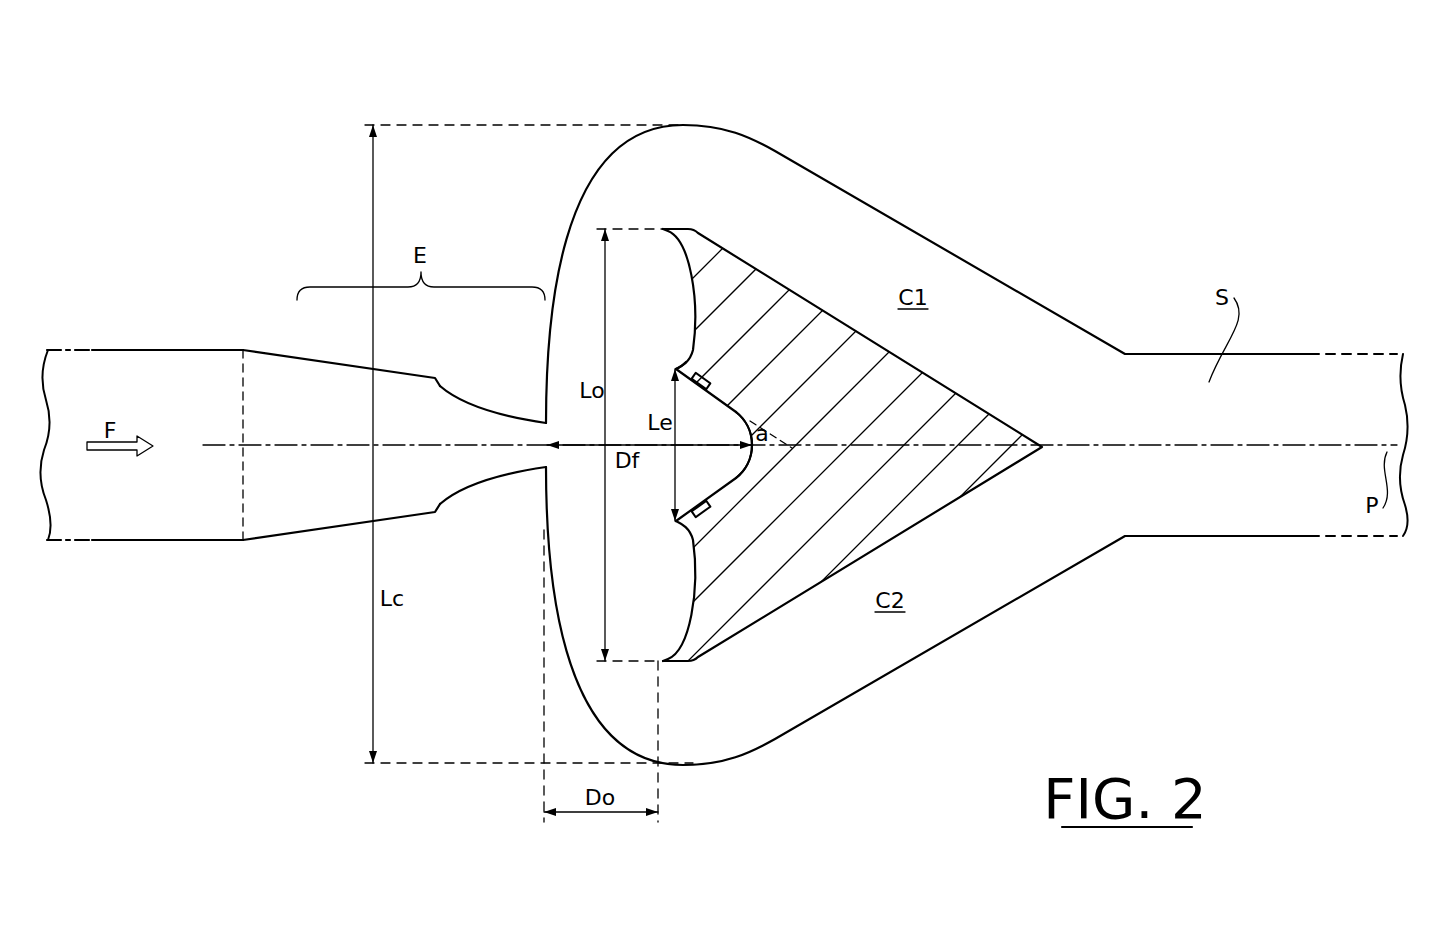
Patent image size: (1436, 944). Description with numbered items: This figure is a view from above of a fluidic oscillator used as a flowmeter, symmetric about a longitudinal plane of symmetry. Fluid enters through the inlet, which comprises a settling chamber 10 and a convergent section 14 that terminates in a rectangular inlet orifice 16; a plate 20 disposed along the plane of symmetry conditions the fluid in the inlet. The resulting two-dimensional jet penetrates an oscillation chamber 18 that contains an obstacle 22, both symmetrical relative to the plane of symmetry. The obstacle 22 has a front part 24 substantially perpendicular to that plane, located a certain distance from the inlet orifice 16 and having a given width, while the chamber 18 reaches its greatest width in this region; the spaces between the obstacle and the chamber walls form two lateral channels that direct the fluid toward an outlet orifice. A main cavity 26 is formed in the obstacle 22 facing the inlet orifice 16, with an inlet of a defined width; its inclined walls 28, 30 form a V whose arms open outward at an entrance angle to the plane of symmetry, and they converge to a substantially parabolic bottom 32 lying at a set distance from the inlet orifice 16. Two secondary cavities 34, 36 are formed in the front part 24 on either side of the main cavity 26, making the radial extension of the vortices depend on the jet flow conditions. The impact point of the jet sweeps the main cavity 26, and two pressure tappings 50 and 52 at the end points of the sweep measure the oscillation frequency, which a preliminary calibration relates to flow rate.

The settling chamber 10 is at (322, 356).
The convergent section 14 is at (458, 400).
The inlet orifice 16 is at (530, 423).
The oscillation chamber 18 is at (838, 188).
The plate 20 is at (393, 445).
The obstacle 22 is at (896, 415).
The front part 24 is at (668, 362).
The main cavity 26 is at (708, 480).
The inclined wall 28 is at (744, 400).
The inclined wall 30 is at (727, 494).
The parabolic bottom 32 is at (748, 432).
The secondary cavity 34 is at (682, 308).
The secondary cavity 36 is at (682, 612).
The pressure tapping 50 is at (704, 378).
The pressure tapping 52 is at (702, 523).